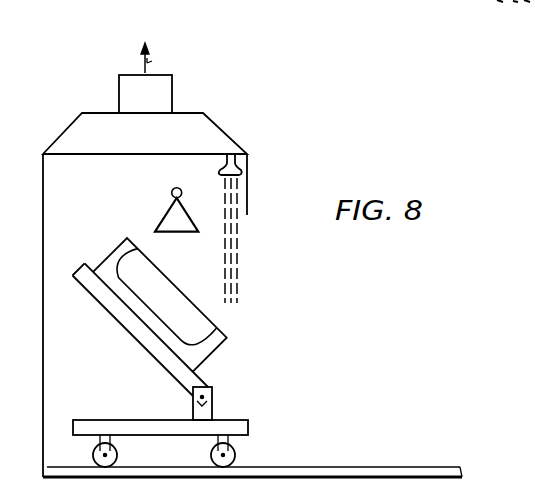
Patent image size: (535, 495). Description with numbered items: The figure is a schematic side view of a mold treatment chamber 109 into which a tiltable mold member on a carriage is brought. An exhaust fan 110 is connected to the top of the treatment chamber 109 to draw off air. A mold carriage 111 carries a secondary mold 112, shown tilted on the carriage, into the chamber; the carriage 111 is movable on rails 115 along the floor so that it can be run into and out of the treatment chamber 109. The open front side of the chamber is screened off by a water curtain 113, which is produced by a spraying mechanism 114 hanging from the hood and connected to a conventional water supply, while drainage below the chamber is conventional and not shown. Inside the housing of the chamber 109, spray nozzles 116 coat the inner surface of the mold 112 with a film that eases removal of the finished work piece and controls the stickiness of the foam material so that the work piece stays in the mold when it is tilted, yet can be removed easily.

The mold treatment chamber 109 is at (247, 114).
The exhaust fan 110 is at (168, 100).
The mold carriage 111 is at (230, 427).
The secondary mold 112 is at (217, 339).
The water curtain 113 is at (232, 235).
The spraying mechanism 114 is at (237, 170).
The rails 115 is at (330, 472).
The spray nozzles 116 is at (171, 192).